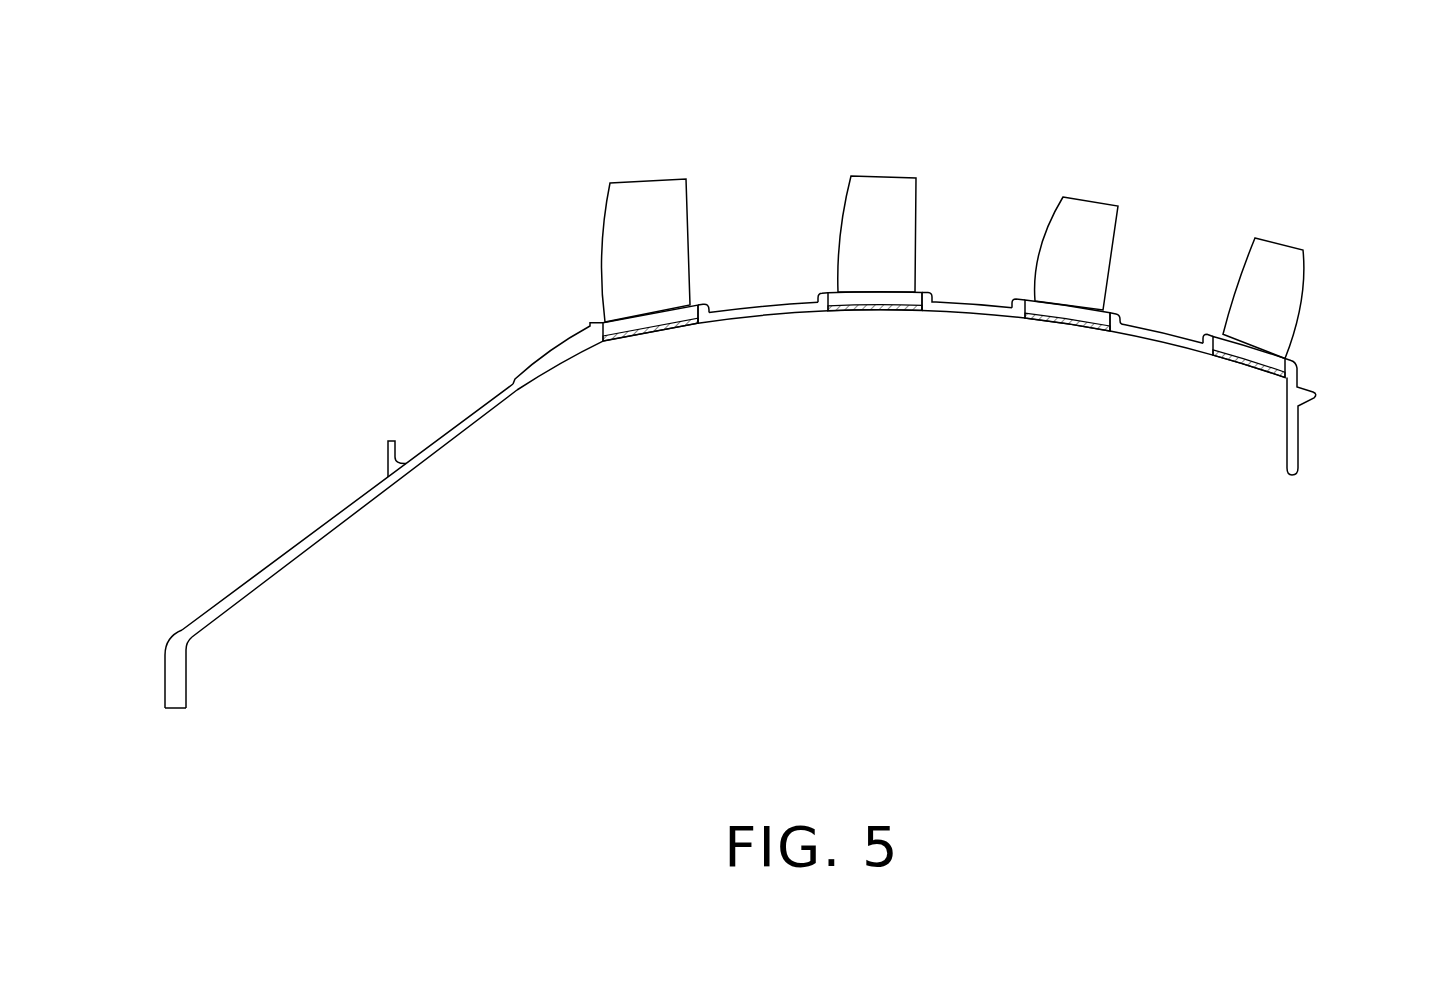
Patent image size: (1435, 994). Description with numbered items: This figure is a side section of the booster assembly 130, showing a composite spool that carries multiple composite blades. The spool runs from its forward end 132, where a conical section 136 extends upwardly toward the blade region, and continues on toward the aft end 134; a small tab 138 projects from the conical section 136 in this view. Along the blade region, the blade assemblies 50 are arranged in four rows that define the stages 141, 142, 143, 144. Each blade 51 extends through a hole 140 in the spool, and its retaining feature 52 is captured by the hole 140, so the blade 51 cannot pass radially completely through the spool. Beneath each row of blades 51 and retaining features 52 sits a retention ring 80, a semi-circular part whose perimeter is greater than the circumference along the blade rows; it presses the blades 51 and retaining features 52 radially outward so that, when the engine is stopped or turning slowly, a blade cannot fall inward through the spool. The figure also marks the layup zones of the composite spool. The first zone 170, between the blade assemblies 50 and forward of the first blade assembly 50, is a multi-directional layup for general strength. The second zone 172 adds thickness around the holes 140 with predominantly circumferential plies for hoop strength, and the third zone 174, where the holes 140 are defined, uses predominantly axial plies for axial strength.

The booster assembly 130 is at (1278, 125).
The blade assembly 50 is at (656, 165).
The blade 51 is at (622, 212).
The retaining feature 52 is at (622, 330).
The retention ring 80 is at (667, 340).
The forward end 132 is at (158, 640).
The aft end 134 is at (1326, 420).
The conical section 136 is at (362, 498).
The tab 138 is at (399, 420).
The hole 140 is at (688, 330).
The first stage 141 is at (654, 355).
The second stage 142 is at (877, 355).
The third stage 143 is at (1038, 358).
The fourth stage 144 is at (1246, 380).
The first zone 170 is at (536, 352).
The second zone 172 is at (587, 318).
The third zone 174 is at (668, 310).